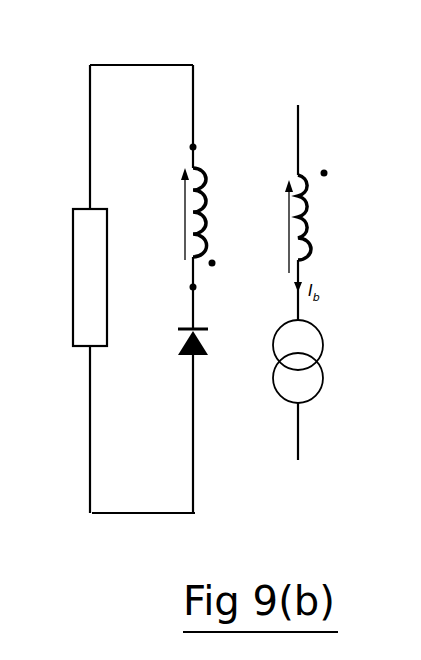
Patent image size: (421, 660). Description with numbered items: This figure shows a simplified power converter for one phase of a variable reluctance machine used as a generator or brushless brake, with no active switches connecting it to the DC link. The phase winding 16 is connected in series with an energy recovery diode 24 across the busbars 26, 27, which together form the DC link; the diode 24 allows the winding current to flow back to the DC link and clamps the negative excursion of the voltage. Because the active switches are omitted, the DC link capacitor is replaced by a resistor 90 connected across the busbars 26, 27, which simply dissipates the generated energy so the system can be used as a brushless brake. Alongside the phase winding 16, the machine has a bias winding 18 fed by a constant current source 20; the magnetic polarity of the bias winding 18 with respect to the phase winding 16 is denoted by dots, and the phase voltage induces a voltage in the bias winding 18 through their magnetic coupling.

The phase winding 16 is at (212, 192).
The bias winding 18 is at (315, 198).
The constant current source 20 is at (318, 330).
The energy recovery diode 24 is at (178, 336).
The busbar 26 is at (167, 65).
The busbar 27 is at (148, 513).
The resistor 90 is at (73, 278).